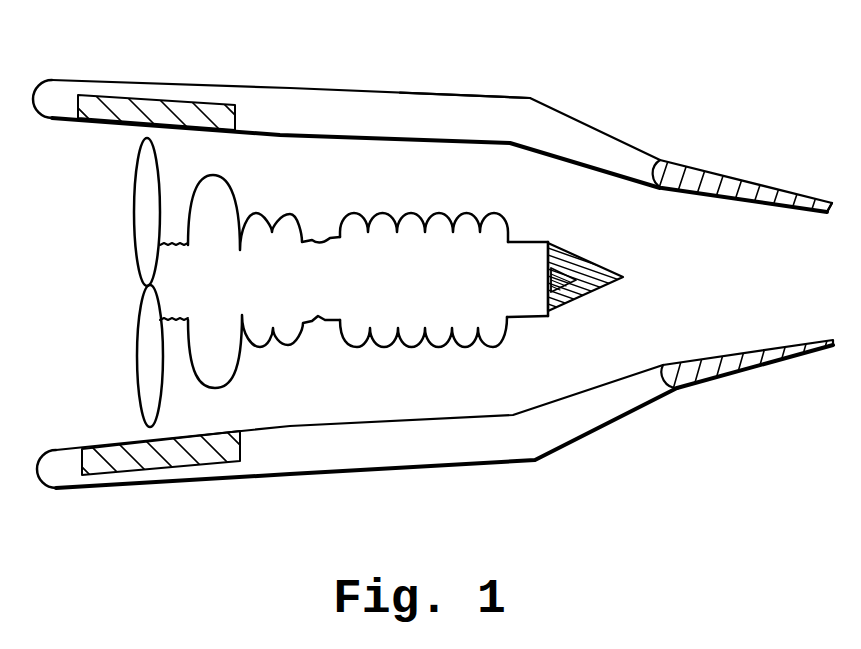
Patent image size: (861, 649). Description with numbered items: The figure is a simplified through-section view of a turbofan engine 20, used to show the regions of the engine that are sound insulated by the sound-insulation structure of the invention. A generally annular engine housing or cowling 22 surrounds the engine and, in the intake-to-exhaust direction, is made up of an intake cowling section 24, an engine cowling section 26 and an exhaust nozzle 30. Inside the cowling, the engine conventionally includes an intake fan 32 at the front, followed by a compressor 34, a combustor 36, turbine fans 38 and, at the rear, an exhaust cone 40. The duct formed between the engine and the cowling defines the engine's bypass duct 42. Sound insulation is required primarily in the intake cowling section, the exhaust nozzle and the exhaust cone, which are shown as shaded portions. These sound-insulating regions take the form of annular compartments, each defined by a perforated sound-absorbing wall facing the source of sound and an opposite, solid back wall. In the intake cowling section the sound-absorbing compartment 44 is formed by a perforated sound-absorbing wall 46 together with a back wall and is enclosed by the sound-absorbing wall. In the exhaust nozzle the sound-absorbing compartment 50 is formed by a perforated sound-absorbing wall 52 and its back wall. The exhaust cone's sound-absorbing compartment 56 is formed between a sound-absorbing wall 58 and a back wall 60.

The turbofan engine 20 is at (493, 72).
The engine housing or cowling 22 is at (415, 68).
The intake cowling section 24 is at (172, 69).
The engine cowling section 26 is at (318, 79).
The exhaust nozzle 30 is at (707, 158).
The fan 32 is at (133, 382).
The compressor 34 is at (302, 205).
The combustor 36 is at (449, 203).
The turbine fans 38 is at (498, 218).
The exhaust cone 40 is at (88, 80).
The bypass duct 42 is at (418, 405).
The sound-absorbing compartment 44 is at (109, 121).
The perforated sound-absorbing wall 46 is at (187, 130).
The sound-absorbing compartment 50 is at (767, 193).
The perforated sound-absorbing wall 52 is at (823, 203).
The sound-absorbing compartment 56 is at (582, 293).
The sound-absorbing wall 58 is at (562, 248).
The back wall 60 is at (557, 312).